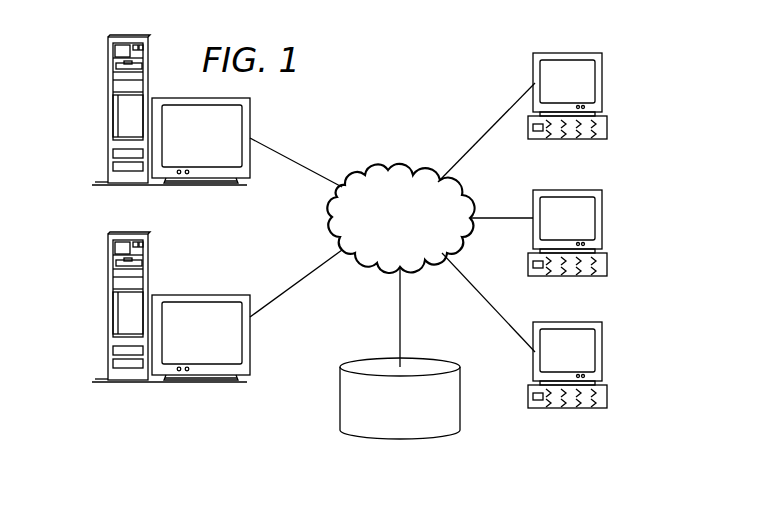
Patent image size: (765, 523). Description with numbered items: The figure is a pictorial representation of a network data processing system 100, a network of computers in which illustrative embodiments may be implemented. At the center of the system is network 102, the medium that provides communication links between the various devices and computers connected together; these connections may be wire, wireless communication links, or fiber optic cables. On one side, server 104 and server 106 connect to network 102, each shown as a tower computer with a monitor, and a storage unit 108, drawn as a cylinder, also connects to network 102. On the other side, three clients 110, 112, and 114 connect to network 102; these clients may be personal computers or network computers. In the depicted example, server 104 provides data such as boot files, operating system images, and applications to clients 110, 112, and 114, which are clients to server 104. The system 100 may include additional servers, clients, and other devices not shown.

The network data processing system 100 is at (449, 65).
The network 102 is at (372, 170).
The server 104 is at (108, 112).
The server 106 is at (108, 310).
The storage unit 108 is at (383, 437).
The client 110 is at (602, 83).
The client 112 is at (602, 218).
The client 114 is at (602, 350).